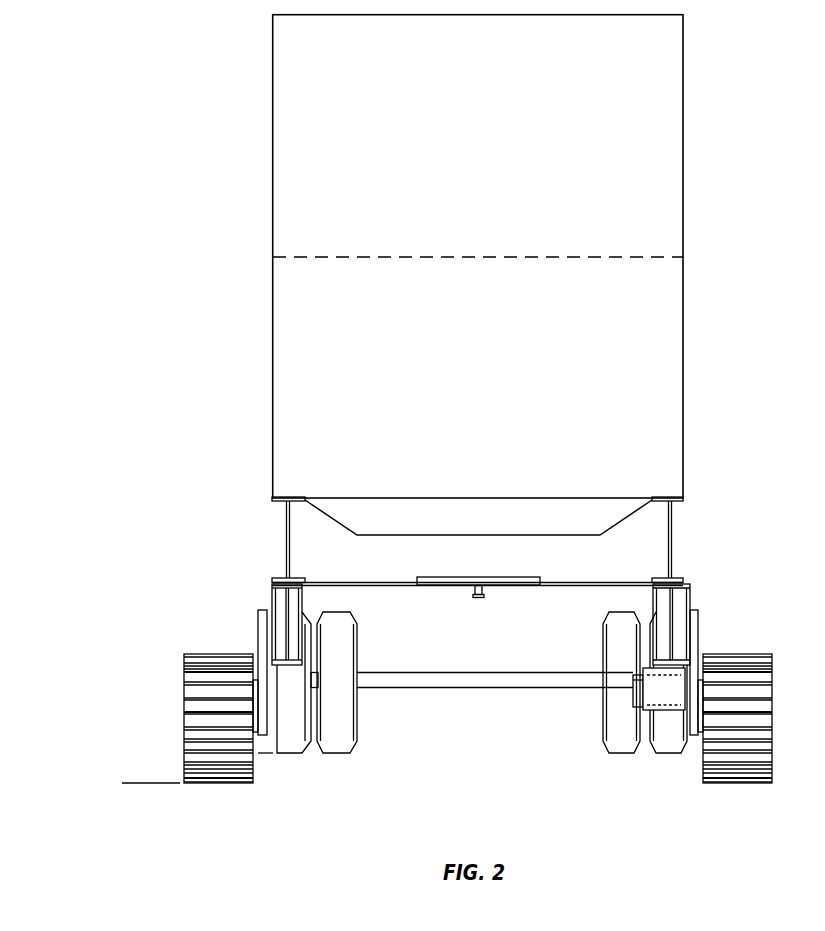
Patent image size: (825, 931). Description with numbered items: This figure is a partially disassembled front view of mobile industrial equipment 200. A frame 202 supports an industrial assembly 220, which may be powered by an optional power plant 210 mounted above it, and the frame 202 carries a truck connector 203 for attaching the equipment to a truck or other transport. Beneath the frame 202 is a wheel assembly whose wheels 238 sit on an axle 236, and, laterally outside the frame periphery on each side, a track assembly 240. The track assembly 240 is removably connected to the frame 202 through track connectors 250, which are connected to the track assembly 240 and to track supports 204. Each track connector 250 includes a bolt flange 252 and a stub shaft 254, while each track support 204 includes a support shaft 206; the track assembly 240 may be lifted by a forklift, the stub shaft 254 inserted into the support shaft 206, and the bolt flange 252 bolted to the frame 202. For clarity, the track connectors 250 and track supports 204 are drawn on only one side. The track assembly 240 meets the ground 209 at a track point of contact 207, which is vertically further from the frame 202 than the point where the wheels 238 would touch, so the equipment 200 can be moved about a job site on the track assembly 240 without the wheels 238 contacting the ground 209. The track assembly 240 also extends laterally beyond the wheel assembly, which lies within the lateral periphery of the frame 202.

The mobile industrial equipment 200 is at (209, 101).
The industrial assembly 220 is at (503, 157).
The power plant 210 is at (496, 405).
The frame 202 is at (272, 543).
The truck connector 203 is at (477, 599).
The track assembly 240 is at (162, 655).
The bolt flange 252 is at (692, 622).
The stub shaft 254 is at (630, 687).
The track connectors 250 is at (628, 697).
The support shaft 206 is at (668, 710).
The track supports 204 is at (686, 752).
The track point of contact 207 is at (270, 753).
The wheels 238 is at (307, 753).
The axle 236 is at (393, 688).
The ground surface 209 is at (155, 783).